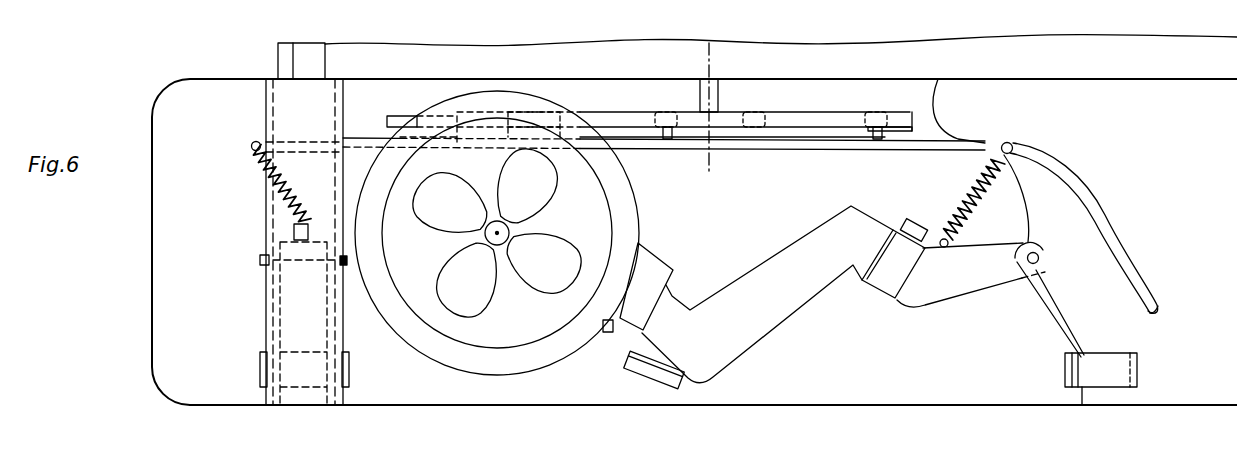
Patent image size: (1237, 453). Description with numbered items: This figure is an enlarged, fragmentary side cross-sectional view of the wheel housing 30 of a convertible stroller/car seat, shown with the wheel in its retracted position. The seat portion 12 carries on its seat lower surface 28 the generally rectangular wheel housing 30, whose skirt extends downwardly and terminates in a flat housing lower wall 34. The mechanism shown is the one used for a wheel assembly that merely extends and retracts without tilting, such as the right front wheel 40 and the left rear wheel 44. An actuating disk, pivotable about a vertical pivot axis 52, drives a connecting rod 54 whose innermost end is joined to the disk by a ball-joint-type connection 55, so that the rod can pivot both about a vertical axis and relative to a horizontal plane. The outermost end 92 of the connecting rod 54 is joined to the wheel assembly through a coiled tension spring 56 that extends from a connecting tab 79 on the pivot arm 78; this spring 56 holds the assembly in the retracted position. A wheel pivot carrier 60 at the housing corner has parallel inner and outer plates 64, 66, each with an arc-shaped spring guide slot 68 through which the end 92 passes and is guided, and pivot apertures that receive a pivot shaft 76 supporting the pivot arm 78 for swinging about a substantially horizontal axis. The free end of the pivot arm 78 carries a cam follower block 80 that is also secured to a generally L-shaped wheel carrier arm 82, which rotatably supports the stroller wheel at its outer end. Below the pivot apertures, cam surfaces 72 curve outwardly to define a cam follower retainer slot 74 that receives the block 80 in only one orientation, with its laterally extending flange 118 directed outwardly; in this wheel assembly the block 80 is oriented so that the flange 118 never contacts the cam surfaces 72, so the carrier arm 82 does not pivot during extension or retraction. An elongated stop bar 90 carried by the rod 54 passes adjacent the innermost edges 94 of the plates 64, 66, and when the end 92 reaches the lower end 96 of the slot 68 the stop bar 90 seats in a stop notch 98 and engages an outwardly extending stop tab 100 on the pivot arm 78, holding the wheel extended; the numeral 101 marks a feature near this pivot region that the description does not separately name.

The seat portion 12 is at (546, 55).
The seat lower surface 28 is at (486, 78).
The wheel housing 30 is at (192, 77).
The housing lower wall 34 is at (380, 407).
The right front wheel 40 is at (522, 368).
The left rear wheel 44 is at (497, 233).
The vertical pivot axis 52 is at (710, 62).
The connecting rod 54 is at (768, 148).
The connection 55 is at (665, 112).
The coiled tension spring 56 is at (262, 176).
The wheel pivot carrier 60 is at (263, 300).
The inner plate 64 is at (343, 338).
The outer plate 66 is at (263, 338).
The spring guide slot 68 is at (1113, 236).
The cam surface 72 is at (1065, 368).
The cam follower retainer slot 74 is at (1183, 392).
The pivot shaft 76 is at (260, 260).
The pivot arm 78 is at (957, 290).
The connecting tab 79 is at (953, 243).
The cam follower block 80 is at (882, 297).
The wheel carrier arm 82 is at (753, 318).
The stop bar 90 is at (393, 114).
The outermost end 92 is at (252, 143).
The innermost edge 94 is at (1018, 186).
The lower end 96 is at (1160, 310).
The stop notch 98 is at (1033, 236).
The stop tab 100 is at (1046, 254).
The pivot pin 101 is at (1042, 243).
The flange 118 is at (912, 223).